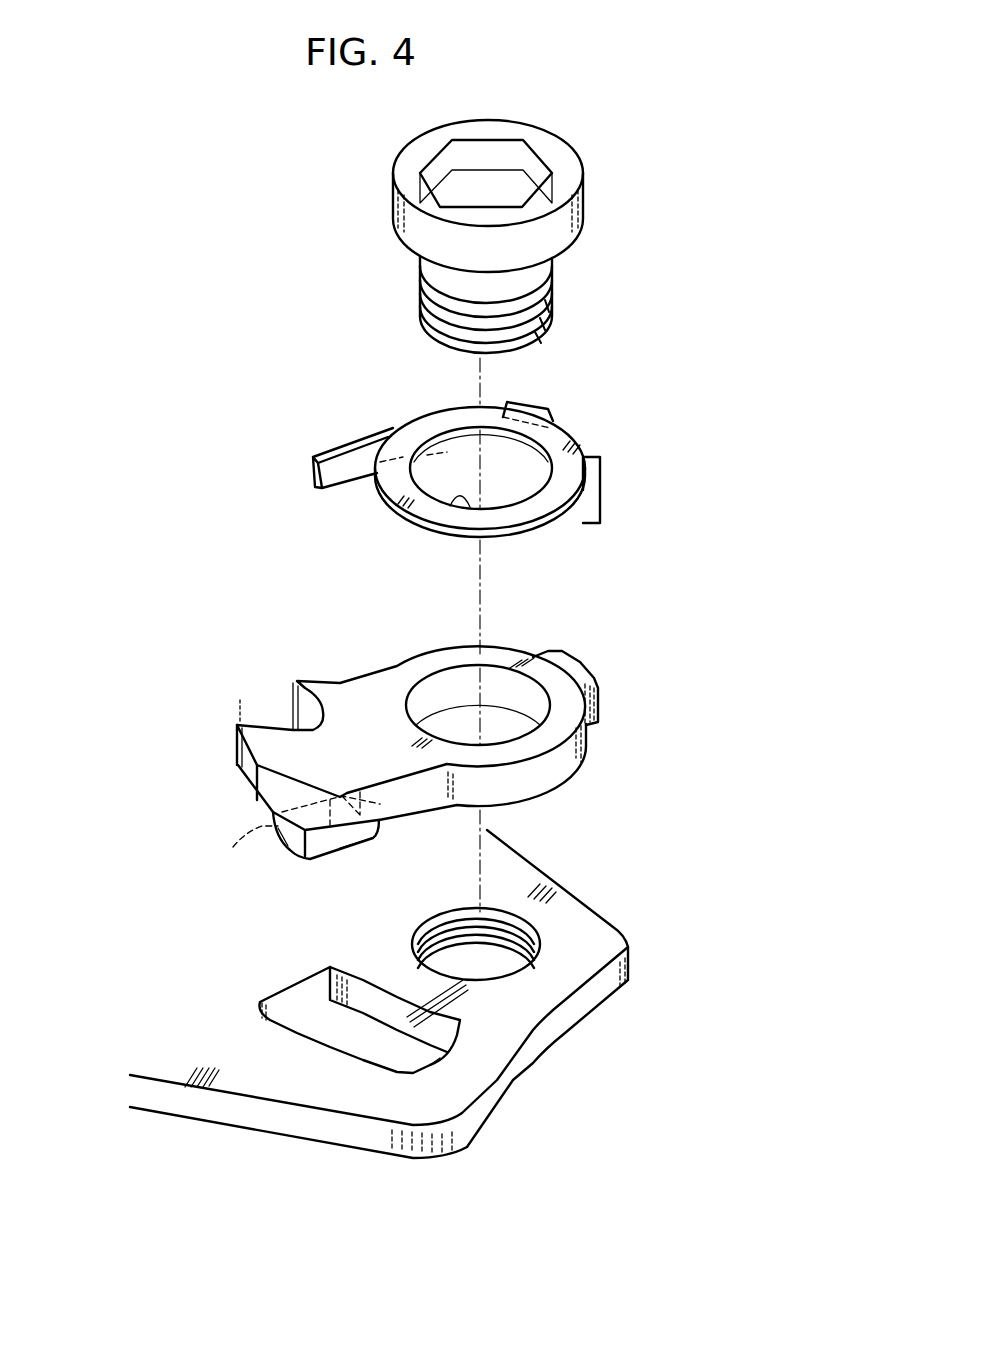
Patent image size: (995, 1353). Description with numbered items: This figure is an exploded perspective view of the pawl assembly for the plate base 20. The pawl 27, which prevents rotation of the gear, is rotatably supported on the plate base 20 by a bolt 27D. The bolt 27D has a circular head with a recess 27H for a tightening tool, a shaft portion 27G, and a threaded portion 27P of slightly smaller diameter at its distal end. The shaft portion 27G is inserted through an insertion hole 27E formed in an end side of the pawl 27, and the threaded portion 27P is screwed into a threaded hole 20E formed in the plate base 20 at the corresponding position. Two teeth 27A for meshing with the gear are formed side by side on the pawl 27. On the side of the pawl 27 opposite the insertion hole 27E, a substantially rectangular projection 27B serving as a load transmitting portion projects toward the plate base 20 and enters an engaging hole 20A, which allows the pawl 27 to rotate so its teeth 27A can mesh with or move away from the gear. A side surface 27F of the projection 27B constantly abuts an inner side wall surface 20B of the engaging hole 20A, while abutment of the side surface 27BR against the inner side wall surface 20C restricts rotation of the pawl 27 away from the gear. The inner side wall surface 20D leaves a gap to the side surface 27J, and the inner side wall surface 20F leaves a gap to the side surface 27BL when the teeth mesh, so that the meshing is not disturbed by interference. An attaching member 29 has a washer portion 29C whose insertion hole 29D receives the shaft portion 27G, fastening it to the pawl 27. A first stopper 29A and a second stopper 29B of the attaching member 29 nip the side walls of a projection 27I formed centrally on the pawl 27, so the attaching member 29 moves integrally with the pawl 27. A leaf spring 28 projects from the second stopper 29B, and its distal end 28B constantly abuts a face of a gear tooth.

The plate base 20 is at (390, 1039).
The engaging hole 20A is at (341, 1040).
The inner side wall surface 20B is at (417, 1030).
The inner side wall surface 20C is at (423, 1063).
The inner side wall surface 20D is at (300, 1033).
The threaded hole 20E is at (500, 943).
The inner side wall surface 20F is at (277, 995).
The pawl 27 is at (399, 783).
The teeth 27A is at (246, 718).
The projection 27B is at (318, 865).
The side surface 27BL is at (280, 837).
The side surface 27BR is at (350, 840).
The bolt 27D is at (530, 217).
The insertion hole 27E is at (437, 698).
The side surface 27F is at (380, 820).
The shaft portion 27G is at (543, 271).
The recess 27H is at (496, 158).
The projection 27I is at (593, 673).
The side surface 27J is at (212, 810).
The threaded portion 27P is at (538, 333).
The leaf spring 28 is at (355, 465).
The distal end 28B is at (313, 478).
The attaching member 29 is at (464, 501).
The first stopper 29A is at (605, 508).
The second stopper 29B is at (555, 422).
The washer portion 29C is at (518, 518).
The insertion hole 29D is at (463, 498).